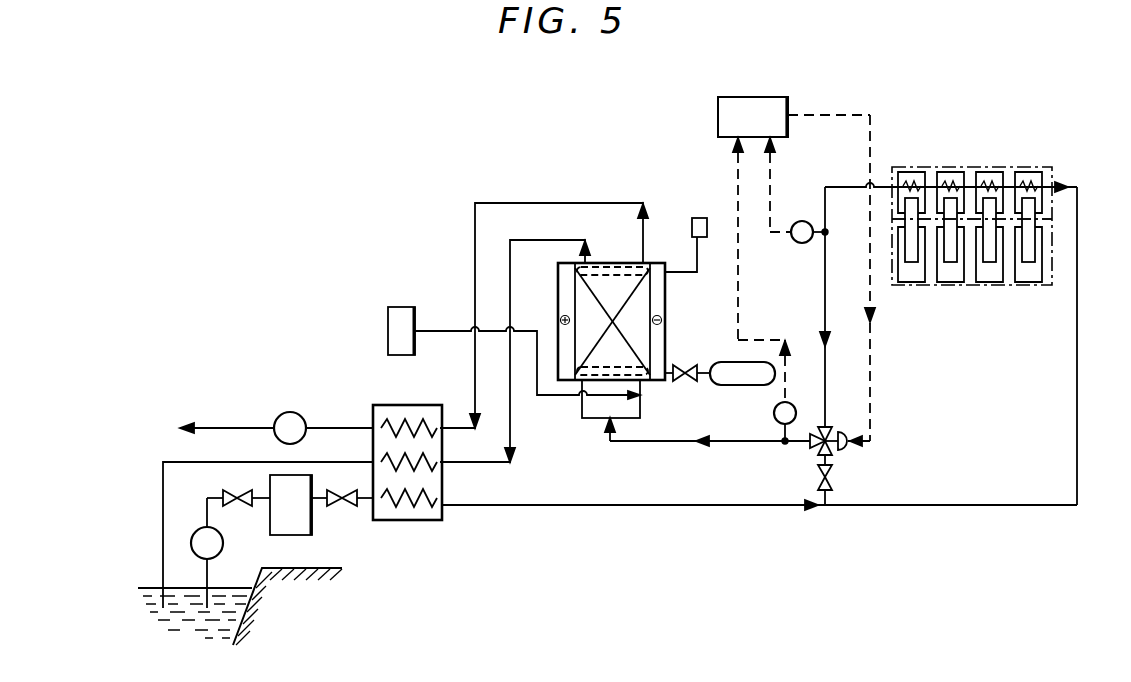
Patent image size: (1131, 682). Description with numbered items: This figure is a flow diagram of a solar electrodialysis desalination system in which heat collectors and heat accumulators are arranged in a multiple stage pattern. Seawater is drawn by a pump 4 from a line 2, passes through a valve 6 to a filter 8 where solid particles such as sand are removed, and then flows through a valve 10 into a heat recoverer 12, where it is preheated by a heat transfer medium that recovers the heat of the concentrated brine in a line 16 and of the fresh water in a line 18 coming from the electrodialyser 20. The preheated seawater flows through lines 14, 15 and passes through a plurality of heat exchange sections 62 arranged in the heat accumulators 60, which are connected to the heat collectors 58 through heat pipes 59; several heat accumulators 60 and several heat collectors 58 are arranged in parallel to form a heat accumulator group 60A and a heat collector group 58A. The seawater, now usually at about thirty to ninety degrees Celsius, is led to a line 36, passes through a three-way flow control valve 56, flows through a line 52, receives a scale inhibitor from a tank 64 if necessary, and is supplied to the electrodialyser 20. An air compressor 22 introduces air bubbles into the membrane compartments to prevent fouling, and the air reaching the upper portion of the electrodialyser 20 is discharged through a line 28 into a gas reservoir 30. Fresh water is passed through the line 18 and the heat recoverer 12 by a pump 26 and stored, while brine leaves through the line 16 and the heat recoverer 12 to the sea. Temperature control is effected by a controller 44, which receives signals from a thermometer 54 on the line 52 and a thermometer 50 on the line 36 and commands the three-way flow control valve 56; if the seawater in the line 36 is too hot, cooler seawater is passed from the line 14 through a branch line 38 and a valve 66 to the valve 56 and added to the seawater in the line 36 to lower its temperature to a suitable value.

The line 2 is at (208, 574).
The pump 4 is at (223, 543).
The valve 6 is at (238, 507).
The filter 8 is at (287, 536).
The valve 10 is at (340, 507).
The heat recoverer 12 is at (403, 521).
The line 14 is at (510, 506).
The line 15 is at (920, 506).
The line 16 is at (547, 240).
The line 18 is at (575, 203).
The electrodialyser 20 is at (660, 263).
The air compressor 22 is at (733, 362).
The pump 26 is at (301, 414).
The line 28 is at (697, 255).
The gas reservoir 30 is at (693, 219).
The line 36 is at (825, 285).
The line 38 is at (816, 454).
The controller 44 is at (718, 116).
The thermometer 50 is at (811, 210).
The line 52 is at (738, 440).
The thermometer 54 is at (794, 404).
The three-way flow control valve 56 is at (846, 452).
The heat collector 58 is at (1052, 280).
The heat collector group 58A is at (1056, 267).
The heat pipes 59 is at (1032, 237).
The heat accumulator 60 is at (1005, 224).
The heat accumulator group 60A is at (1012, 166).
The heat exchange sections 62 is at (990, 178).
The tank 64 is at (402, 306).
The valve 66 is at (828, 480).